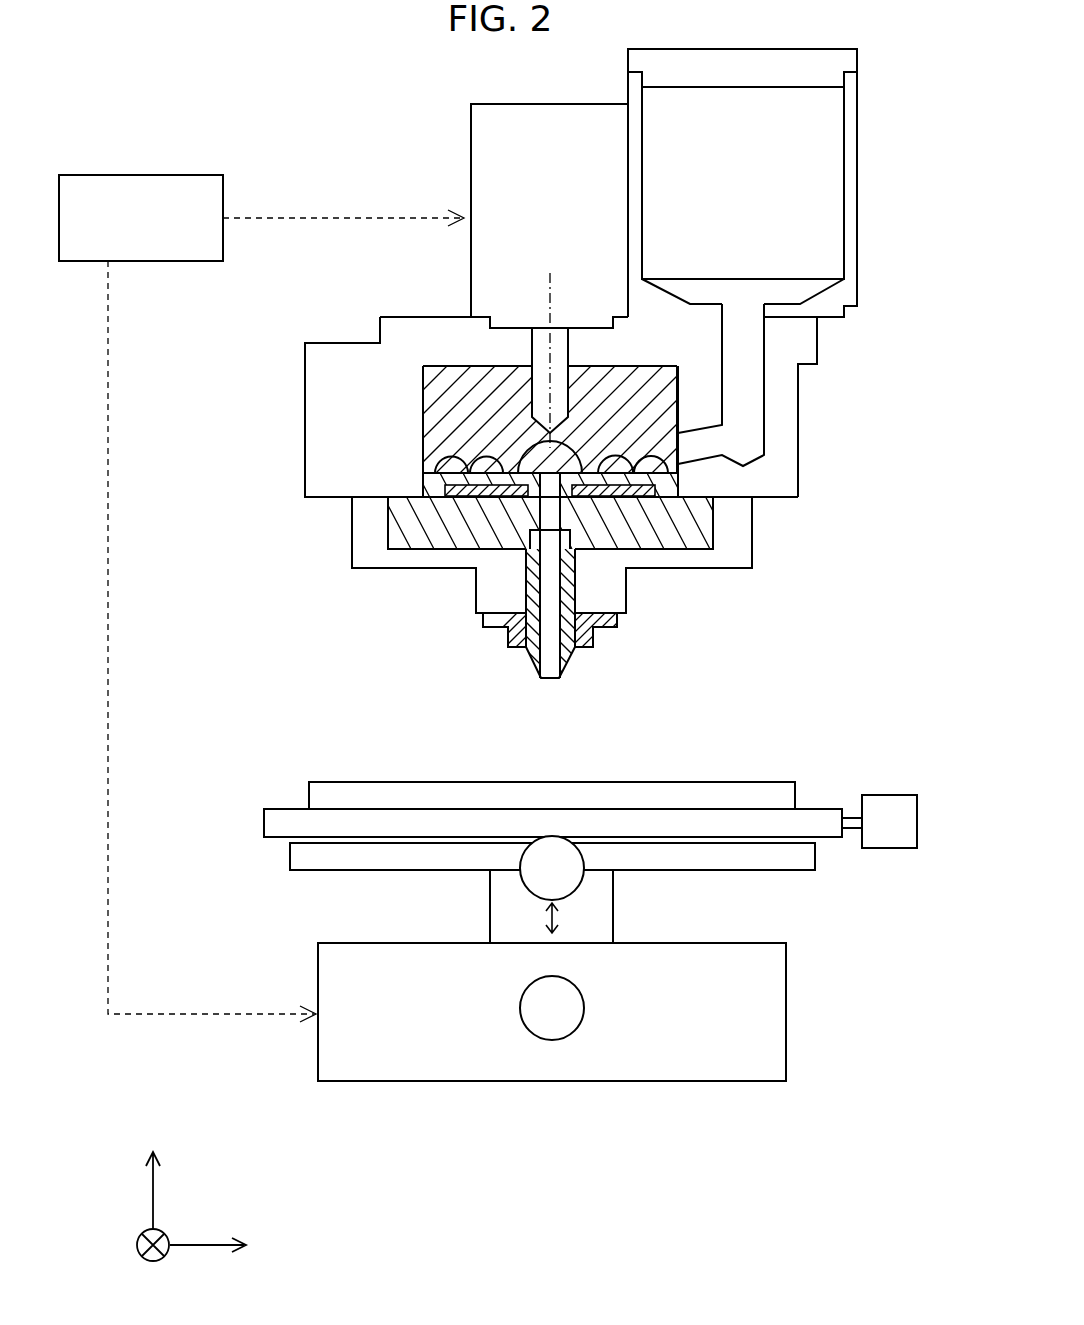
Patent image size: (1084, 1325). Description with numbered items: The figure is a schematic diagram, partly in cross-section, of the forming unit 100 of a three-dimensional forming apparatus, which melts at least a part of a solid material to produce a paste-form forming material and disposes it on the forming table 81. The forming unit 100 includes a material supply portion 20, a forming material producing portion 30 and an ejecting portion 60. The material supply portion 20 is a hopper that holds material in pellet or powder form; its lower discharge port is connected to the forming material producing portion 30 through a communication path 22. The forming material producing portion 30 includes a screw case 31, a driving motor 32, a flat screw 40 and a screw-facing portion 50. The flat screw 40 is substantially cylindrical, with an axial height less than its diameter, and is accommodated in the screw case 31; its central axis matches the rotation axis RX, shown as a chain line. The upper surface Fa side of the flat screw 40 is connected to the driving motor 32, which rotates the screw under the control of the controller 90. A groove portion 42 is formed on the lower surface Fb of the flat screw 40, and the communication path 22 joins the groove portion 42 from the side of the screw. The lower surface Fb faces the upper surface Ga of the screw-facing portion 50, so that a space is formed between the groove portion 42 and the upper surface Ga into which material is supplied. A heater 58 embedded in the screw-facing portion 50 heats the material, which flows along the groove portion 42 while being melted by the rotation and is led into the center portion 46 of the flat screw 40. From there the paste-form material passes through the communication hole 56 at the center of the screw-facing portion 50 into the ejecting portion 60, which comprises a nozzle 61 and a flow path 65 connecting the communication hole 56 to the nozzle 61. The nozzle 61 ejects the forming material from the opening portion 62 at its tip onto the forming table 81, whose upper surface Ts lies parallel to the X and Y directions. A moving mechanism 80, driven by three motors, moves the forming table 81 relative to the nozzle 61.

The forming unit 100 is at (195, 98).
The controller 90 is at (137, 175).
The forming material producing portion 30 is at (357, 173).
The driving motor 32 is at (471, 138).
The screw case 31 is at (433, 317).
The material supply portion 20 is at (857, 172).
The communication path 22 is at (740, 388).
The flat screw 40 is at (448, 398).
The center portion 46 is at (533, 460).
The groove portion 42 is at (488, 468).
The screw-facing portion 50 is at (402, 527).
The communication hole 56 is at (565, 530).
The heater 58 is at (575, 515).
The flow path 65 is at (555, 557).
The ejecting portion 60 is at (700, 632).
The nozzle 61 is at (608, 638).
The opening portion 62 is at (547, 677).
The moving mechanism 80 is at (838, 918).
The forming table 81 is at (797, 793).
The rotation axis RX is at (550, 283).
The upper surface Fa is at (460, 370).
The lower surface Fb is at (438, 492).
The upper surface Ga is at (465, 470).
The upper surface Ts is at (650, 782).